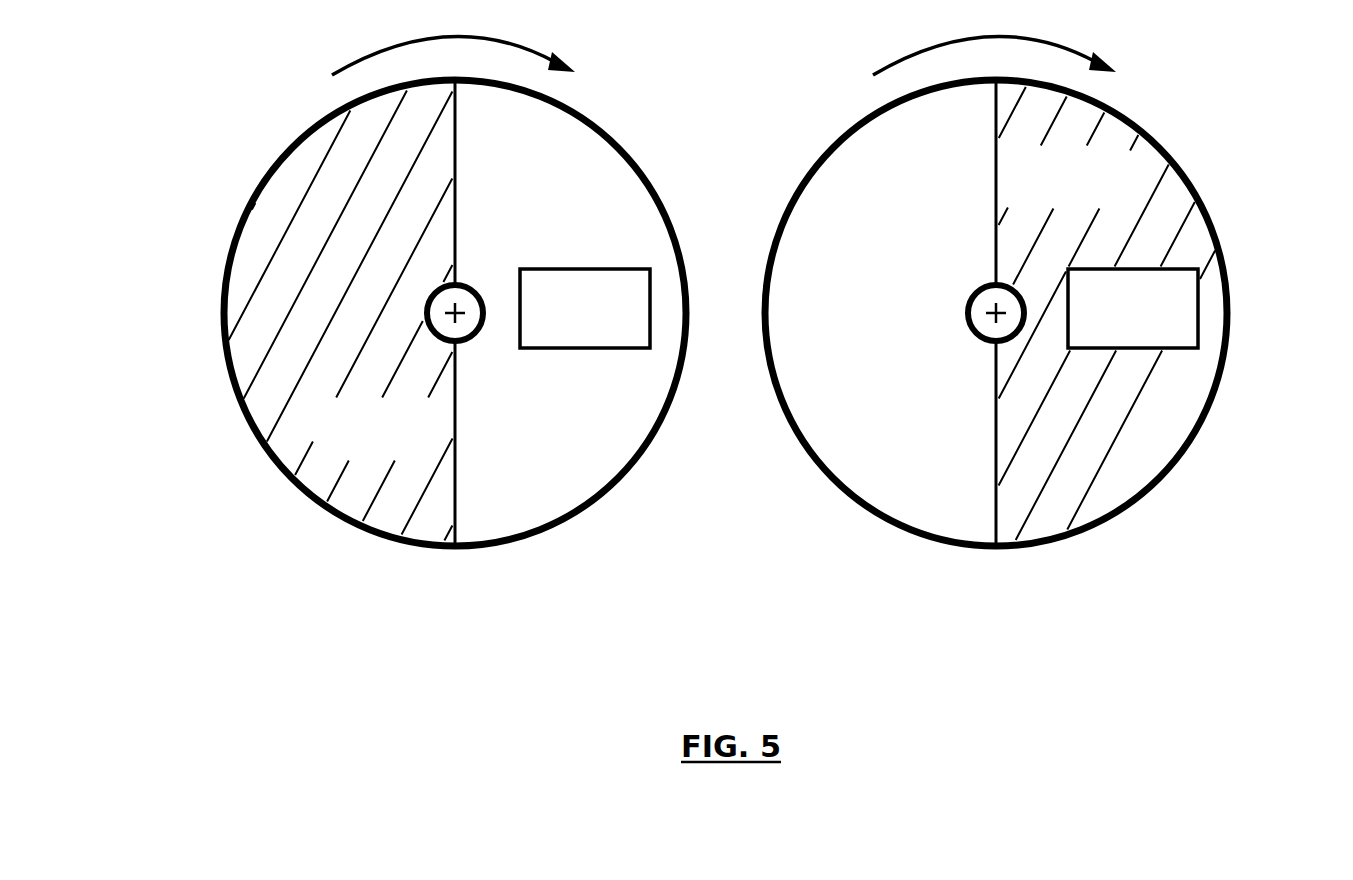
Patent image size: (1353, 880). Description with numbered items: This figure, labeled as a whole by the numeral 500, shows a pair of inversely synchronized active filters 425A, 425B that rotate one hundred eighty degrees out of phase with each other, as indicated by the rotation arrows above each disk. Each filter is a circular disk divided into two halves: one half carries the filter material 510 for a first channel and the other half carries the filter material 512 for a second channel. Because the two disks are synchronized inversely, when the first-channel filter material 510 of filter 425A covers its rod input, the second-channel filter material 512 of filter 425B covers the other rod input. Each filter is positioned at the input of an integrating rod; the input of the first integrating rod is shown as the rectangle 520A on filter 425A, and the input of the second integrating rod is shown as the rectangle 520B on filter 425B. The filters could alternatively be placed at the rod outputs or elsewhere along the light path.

The disk rotation illustration 500 is at (738, 100).
The active filter 425A is at (340, 528).
The active filter 425B is at (866, 528).
The filter material for a first channel 510 is at (426, 457).
The filter material for a second channel 512 is at (515, 204).
The integrating rod input 520A is at (577, 287).
The integrating rod input 520B is at (1138, 287).